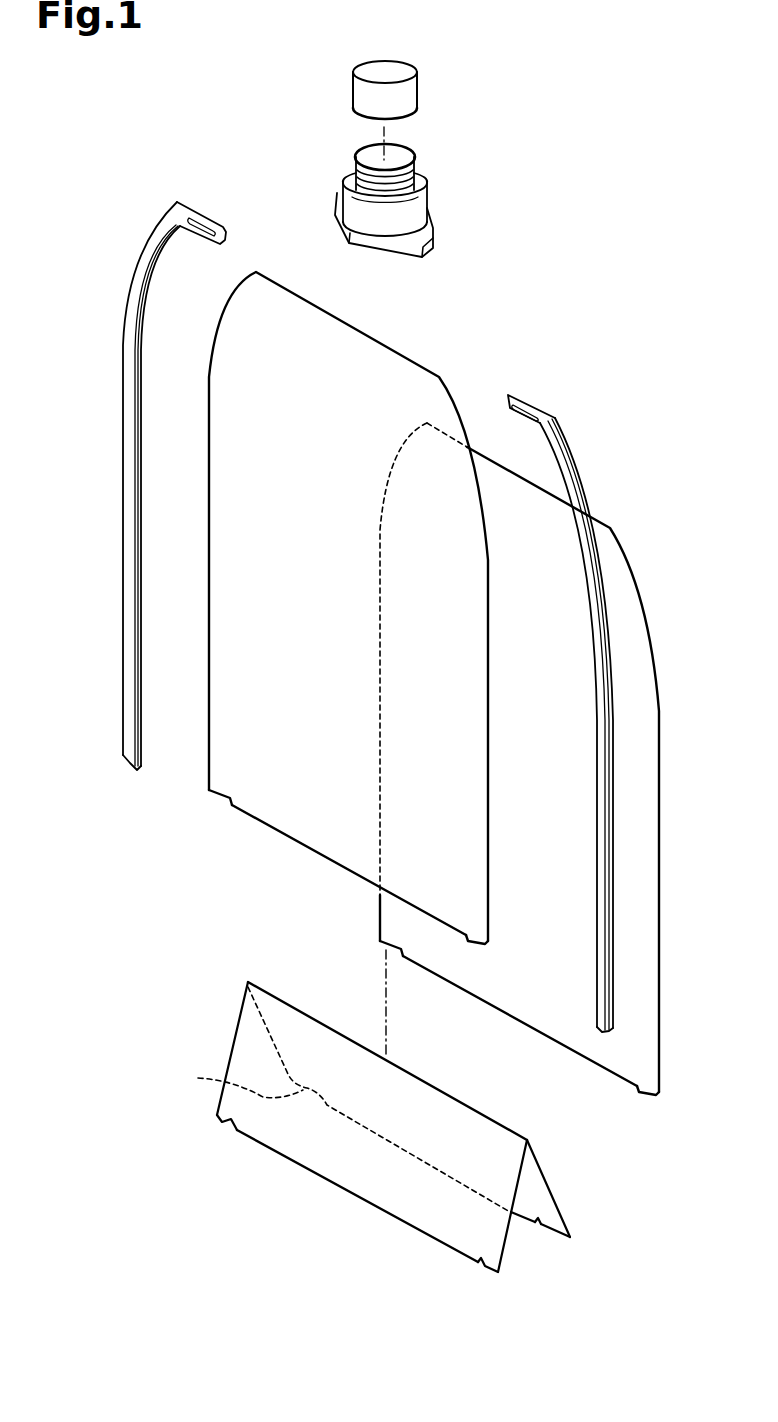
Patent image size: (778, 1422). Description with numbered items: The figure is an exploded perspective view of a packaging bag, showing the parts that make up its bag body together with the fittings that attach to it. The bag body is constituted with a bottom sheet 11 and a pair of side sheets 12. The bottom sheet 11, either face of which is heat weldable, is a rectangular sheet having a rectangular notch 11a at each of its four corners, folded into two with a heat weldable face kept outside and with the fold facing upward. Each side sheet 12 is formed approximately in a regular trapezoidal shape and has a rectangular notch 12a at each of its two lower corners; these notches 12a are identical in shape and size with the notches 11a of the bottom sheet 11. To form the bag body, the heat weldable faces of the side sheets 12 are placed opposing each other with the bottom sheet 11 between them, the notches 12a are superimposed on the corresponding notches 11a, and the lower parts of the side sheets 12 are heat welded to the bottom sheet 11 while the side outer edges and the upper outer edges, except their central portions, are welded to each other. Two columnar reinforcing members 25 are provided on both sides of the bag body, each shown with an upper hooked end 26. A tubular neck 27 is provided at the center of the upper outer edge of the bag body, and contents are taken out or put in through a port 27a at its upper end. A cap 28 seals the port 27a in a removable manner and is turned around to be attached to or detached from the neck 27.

The bottom sheet 11 is at (345, 1177).
The rectangular notch 11a is at (218, 1123).
The side sheet 12 is at (224, 672).
The rectangular notch 12a is at (214, 800).
The columnar reinforcing member 25 is at (142, 268).
The hook of strap 26 is at (197, 222).
The tubular neck 27 is at (415, 207).
The port 27a is at (370, 152).
The cap 28 is at (415, 89).